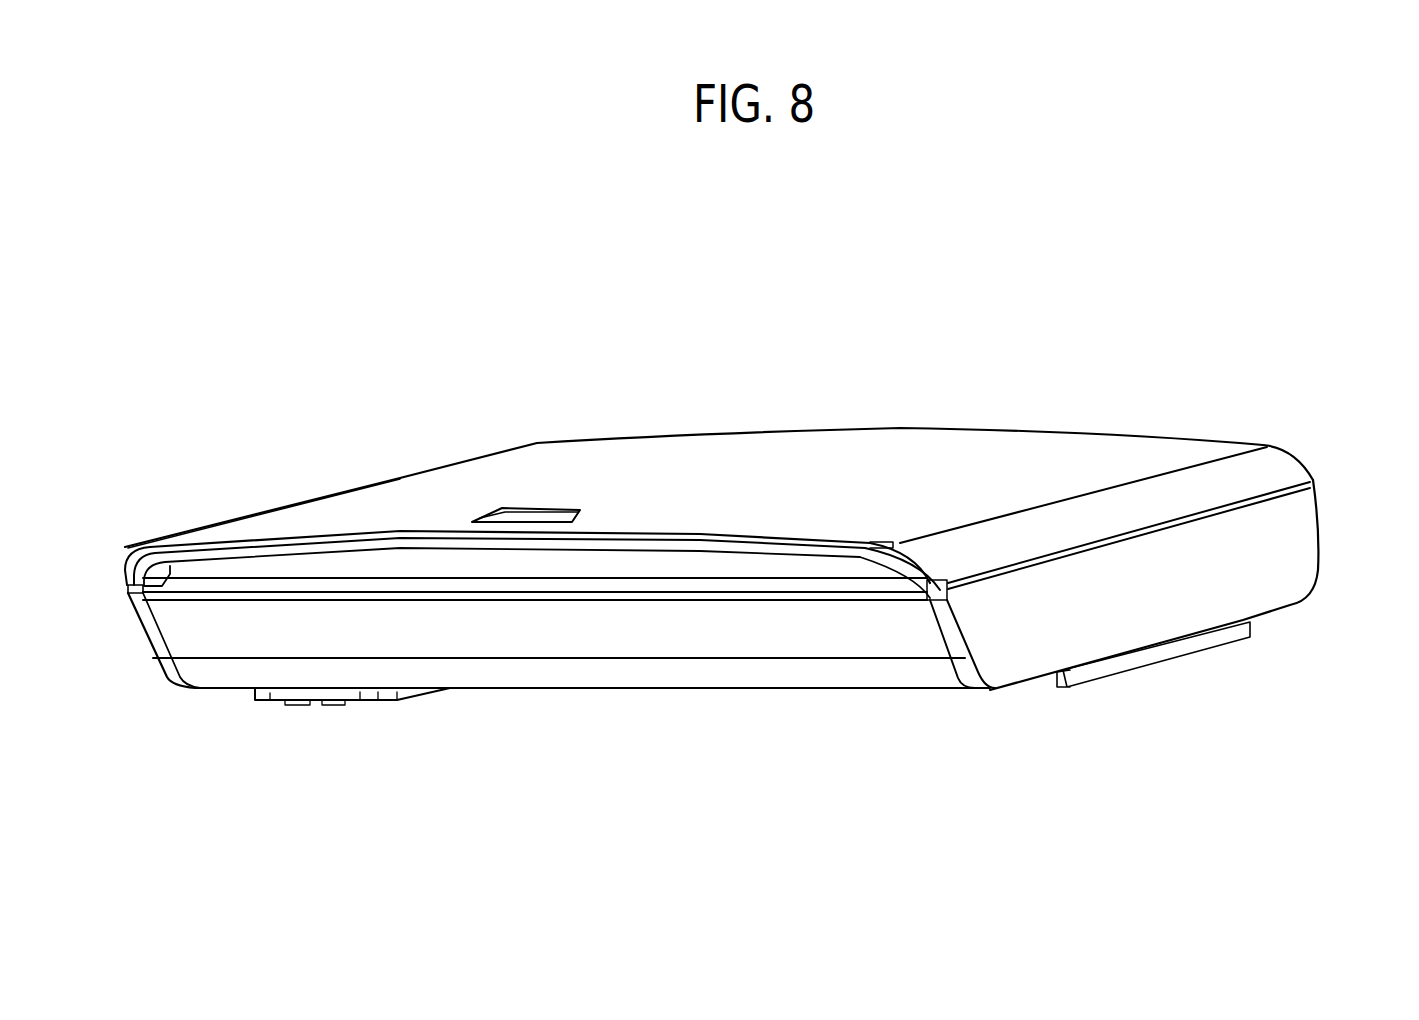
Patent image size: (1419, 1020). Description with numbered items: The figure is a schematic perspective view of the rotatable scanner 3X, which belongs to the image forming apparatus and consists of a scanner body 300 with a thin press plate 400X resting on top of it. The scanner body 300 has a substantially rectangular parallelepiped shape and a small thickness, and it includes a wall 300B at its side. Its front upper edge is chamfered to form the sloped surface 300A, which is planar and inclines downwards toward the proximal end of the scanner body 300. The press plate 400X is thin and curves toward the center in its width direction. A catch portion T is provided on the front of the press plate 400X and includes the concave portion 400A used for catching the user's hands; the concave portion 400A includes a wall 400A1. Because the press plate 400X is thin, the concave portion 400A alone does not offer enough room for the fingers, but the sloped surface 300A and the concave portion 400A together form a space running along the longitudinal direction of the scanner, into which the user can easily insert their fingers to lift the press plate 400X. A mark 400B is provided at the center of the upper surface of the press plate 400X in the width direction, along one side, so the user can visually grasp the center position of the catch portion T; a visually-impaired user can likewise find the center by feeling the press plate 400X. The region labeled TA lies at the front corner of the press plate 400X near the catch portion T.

The rotatable scanner 3X is at (277, 384).
The catch portion T is at (397, 472).
The mark 400B is at (533, 517).
The concave portion 400A is at (607, 557).
The press plate 400X is at (790, 452).
The corner portion of top TA is at (932, 555).
The wall 400A1 is at (160, 572).
The wall 300B is at (156, 588).
The sloped surface 300A is at (690, 583).
The scanner body 300 is at (1290, 548).